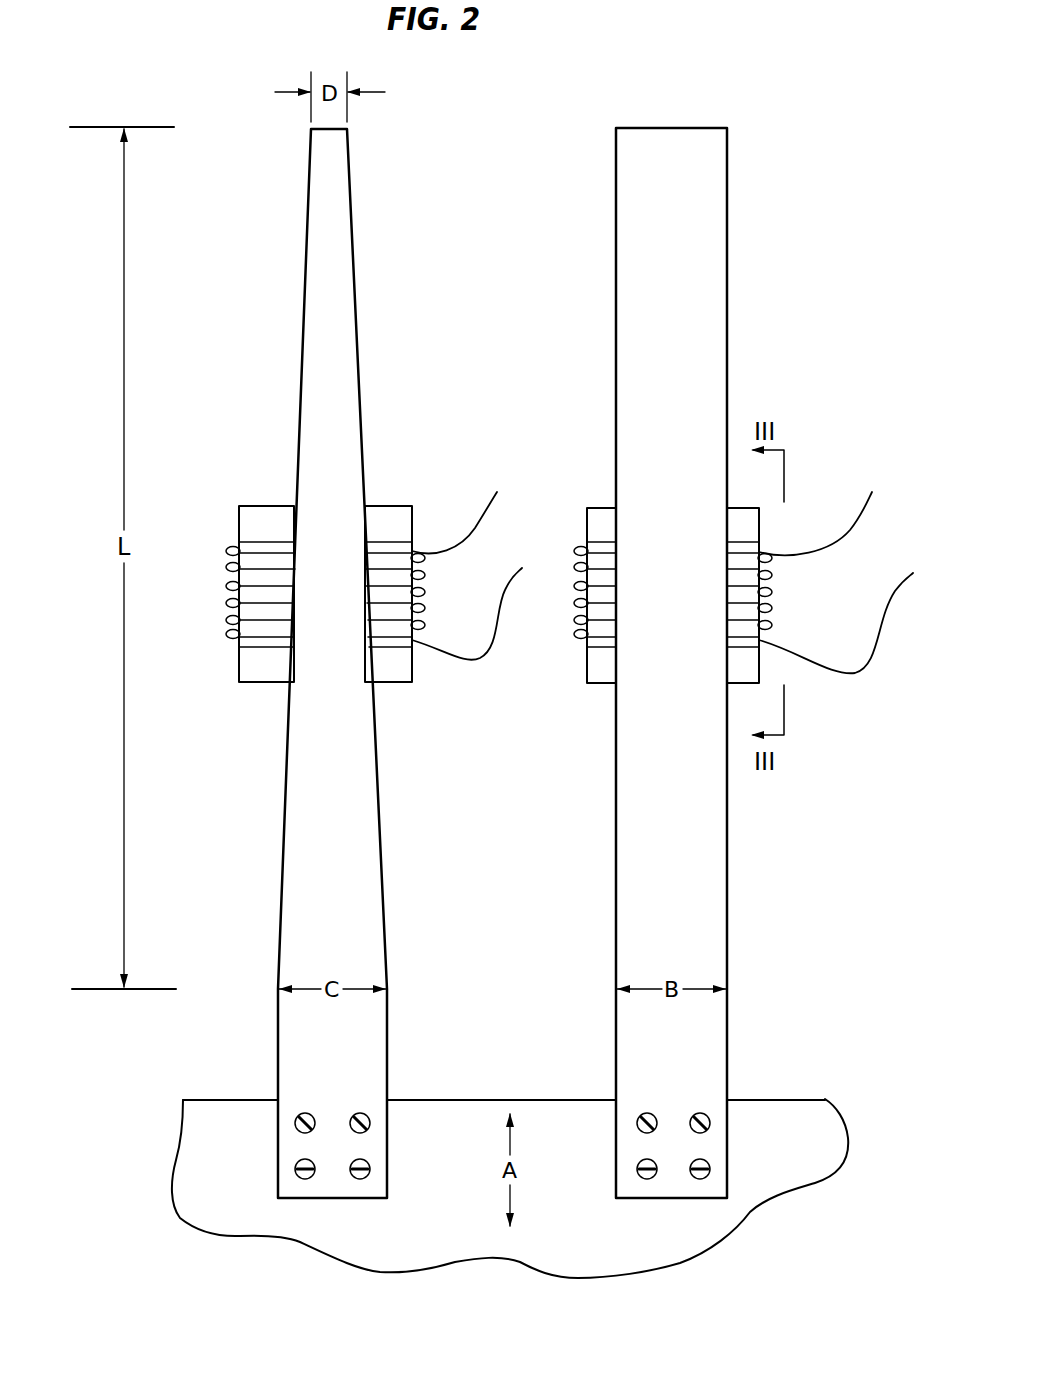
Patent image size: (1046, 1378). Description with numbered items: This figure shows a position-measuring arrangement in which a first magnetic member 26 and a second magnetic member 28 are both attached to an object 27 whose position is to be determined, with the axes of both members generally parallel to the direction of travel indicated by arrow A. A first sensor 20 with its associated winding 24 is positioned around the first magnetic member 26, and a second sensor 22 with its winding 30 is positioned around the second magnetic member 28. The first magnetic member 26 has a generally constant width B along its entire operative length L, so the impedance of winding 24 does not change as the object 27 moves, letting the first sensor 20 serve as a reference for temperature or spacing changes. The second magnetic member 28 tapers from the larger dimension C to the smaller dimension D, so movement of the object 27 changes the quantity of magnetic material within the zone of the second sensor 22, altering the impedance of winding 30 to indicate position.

The first sensor 20 is at (603, 667).
The second sensor 22 is at (392, 673).
The winding 24 is at (776, 552).
The first magnetic member 26 is at (695, 317).
The object 27 is at (442, 1250).
The second magnetic member 28 is at (338, 318).
The winding 30 is at (232, 633).